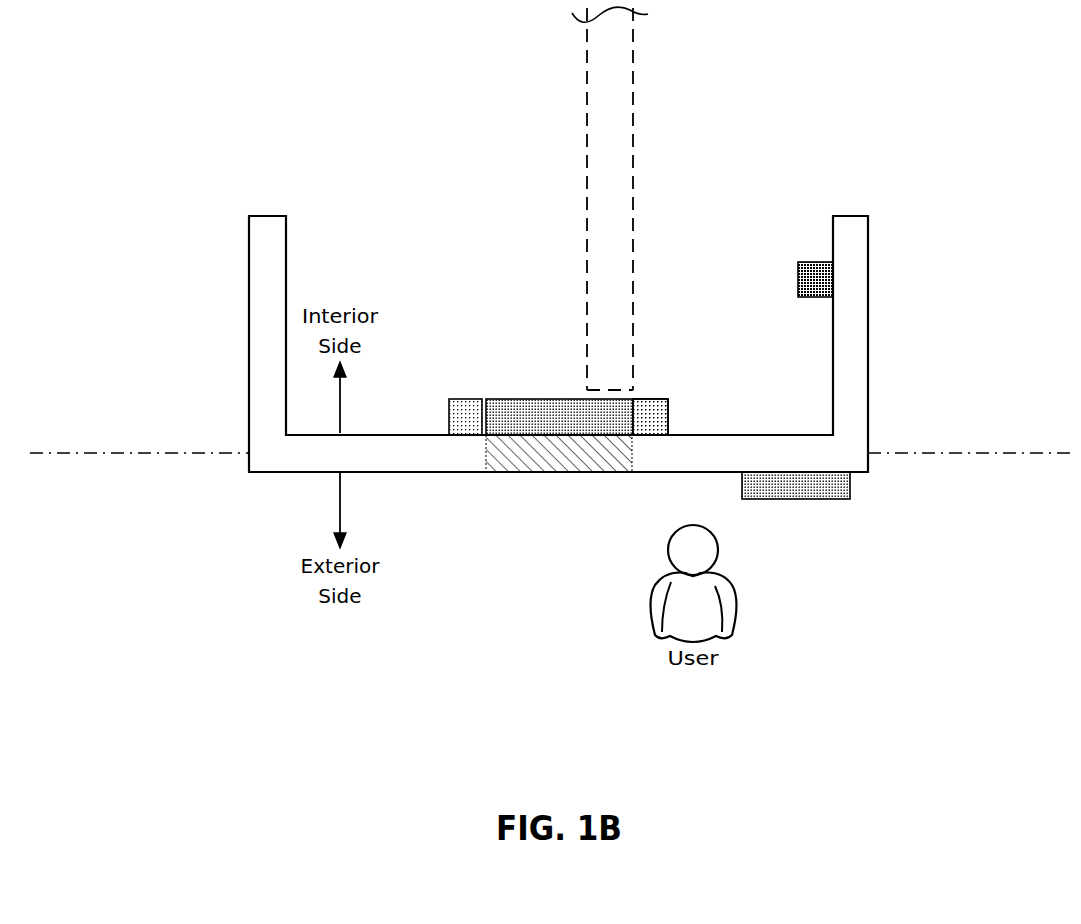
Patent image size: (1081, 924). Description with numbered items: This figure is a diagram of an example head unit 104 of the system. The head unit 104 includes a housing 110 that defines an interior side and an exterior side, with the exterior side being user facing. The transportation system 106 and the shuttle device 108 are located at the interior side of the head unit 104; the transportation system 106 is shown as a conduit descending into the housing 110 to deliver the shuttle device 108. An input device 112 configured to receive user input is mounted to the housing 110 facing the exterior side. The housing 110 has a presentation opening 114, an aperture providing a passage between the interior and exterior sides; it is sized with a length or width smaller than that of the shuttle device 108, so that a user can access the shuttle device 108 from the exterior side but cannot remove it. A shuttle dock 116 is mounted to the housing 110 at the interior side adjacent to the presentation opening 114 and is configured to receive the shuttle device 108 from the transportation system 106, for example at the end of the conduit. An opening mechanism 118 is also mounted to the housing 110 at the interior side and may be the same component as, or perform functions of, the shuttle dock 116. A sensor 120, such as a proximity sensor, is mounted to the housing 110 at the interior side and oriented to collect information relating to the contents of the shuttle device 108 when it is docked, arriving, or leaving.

The head unit 104 is at (250, 114).
The transportation system 106 is at (633, 80).
The shuttle device 108 is at (505, 408).
The housing 110 is at (850, 372).
The input device 112 is at (806, 490).
The presentation opening 114 is at (596, 453).
The shuttle dock 116 is at (663, 405).
The opening mechanism 118 is at (458, 403).
The sensor 120 is at (815, 262).